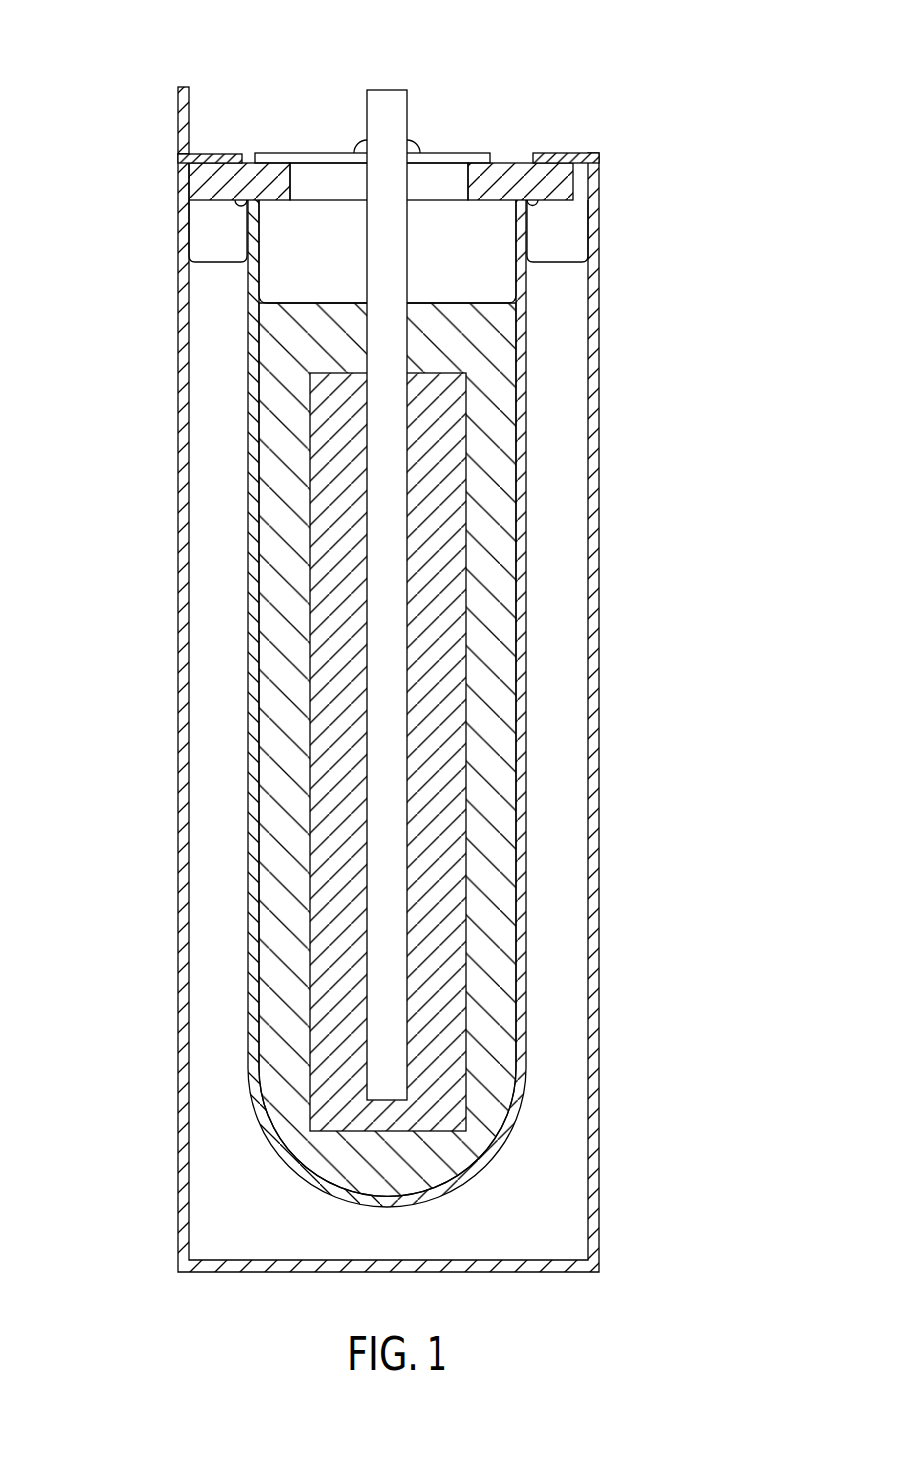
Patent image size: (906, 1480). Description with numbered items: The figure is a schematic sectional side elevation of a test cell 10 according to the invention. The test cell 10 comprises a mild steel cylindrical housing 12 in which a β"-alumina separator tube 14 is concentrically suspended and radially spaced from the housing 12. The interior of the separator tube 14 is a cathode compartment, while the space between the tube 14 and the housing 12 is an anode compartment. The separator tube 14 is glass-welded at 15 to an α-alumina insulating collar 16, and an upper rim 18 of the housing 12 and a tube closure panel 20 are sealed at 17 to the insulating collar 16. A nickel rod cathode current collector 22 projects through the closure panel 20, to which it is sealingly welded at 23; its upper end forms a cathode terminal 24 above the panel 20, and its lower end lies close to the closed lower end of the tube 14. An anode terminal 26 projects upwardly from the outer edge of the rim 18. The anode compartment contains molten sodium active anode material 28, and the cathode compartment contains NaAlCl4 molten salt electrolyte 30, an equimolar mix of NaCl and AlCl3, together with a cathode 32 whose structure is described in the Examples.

The test cell 10 is at (706, 107).
The cylindrical housing 12 is at (595, 727).
The separator tube 14 is at (522, 597).
The glass weld 15 is at (547, 210).
The insulating collar 16 is at (565, 175).
The seal 17 is at (545, 142).
The upper rim 18 is at (564, 160).
The tube closure panel 20 is at (445, 155).
The cathode current collector 22 is at (387, 267).
The weld 23 is at (350, 135).
The cathode terminal 24 is at (385, 102).
The anode terminal 26 is at (183, 116).
The molten sodium active anode material 28 is at (205, 512).
The molten salt electrolyte 30 is at (493, 1039).
The cathode 32 is at (447, 865).